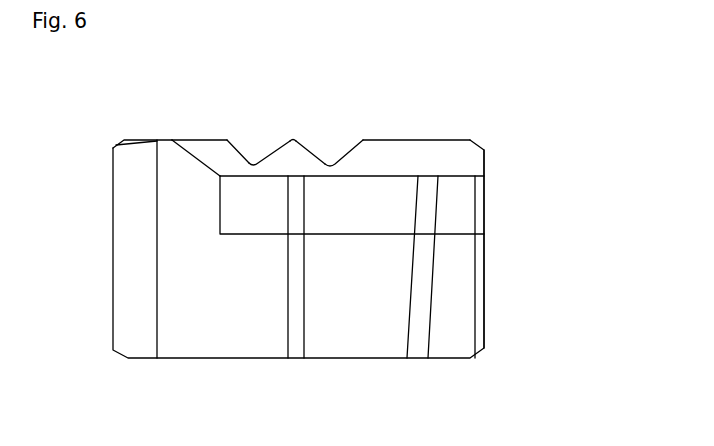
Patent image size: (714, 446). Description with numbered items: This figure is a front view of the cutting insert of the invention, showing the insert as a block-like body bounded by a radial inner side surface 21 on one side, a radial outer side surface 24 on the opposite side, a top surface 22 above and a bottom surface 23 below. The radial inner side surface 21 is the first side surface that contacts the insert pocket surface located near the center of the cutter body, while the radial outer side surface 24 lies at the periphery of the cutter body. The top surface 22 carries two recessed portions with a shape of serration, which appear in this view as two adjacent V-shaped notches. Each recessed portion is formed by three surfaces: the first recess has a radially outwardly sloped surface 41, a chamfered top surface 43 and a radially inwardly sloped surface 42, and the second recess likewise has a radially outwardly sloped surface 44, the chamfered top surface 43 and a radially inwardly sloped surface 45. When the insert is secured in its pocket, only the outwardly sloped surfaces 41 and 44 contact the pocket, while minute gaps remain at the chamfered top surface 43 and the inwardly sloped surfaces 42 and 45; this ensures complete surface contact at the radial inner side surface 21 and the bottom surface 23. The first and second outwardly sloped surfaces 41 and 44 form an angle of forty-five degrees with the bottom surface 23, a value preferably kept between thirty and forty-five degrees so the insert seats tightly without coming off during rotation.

The radial inner side surface 21 is at (113, 248).
The top surface 22 is at (415, 140).
The bottom surface 23 is at (298, 360).
The radial outer side surface 24 is at (485, 247).
The first outwardly sloped surface 41 is at (238, 150).
The radially inwardly sloped surface 42 is at (272, 152).
The chamfered top surface 43 is at (292, 137).
The second outwardly sloped surface 44 is at (313, 152).
The radially inwardly sloped surface 45 is at (349, 152).